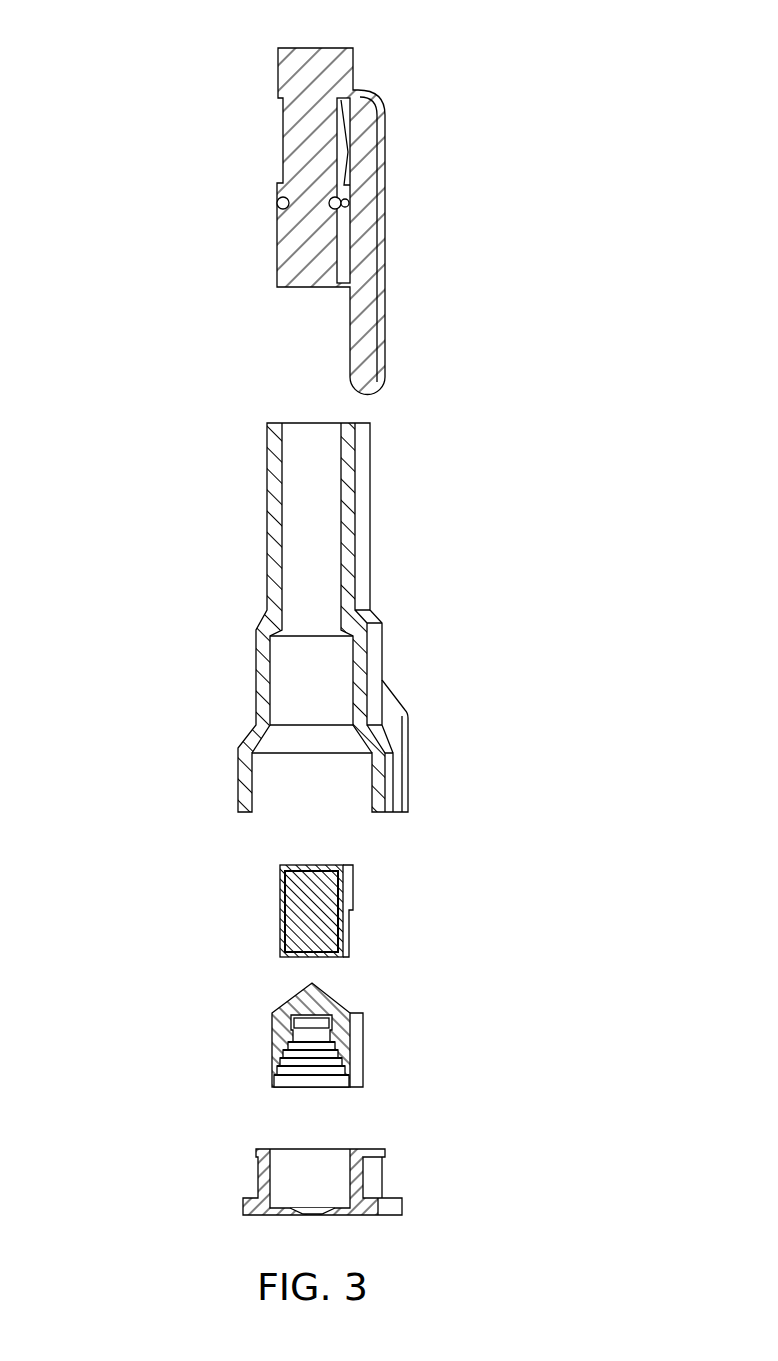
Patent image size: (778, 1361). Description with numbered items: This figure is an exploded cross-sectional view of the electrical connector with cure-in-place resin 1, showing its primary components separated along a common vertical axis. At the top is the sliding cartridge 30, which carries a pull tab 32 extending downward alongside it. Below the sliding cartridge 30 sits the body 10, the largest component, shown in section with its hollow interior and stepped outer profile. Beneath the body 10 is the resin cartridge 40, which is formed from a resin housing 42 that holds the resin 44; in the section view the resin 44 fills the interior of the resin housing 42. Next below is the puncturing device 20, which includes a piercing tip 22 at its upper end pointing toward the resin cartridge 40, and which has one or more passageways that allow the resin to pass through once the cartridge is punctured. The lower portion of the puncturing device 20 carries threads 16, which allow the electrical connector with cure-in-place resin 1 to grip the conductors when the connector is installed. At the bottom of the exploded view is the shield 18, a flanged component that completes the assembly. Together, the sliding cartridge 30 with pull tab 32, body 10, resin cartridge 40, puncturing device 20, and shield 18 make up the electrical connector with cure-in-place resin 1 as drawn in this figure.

The electrical connector with cure-in-place resin 1 is at (128, 81).
The sliding cartridge 30 is at (393, 204).
The pull tab 32 is at (385, 212).
The body 10 is at (443, 555).
The resin cartridge 40 is at (353, 889).
The resin housing 42 is at (280, 898).
The resin 44 is at (288, 938).
The puncturing device 20 is at (325, 1001).
The piercing tip 22 is at (305, 984).
The threads 16 is at (277, 1079).
The shield 18 is at (436, 1117).